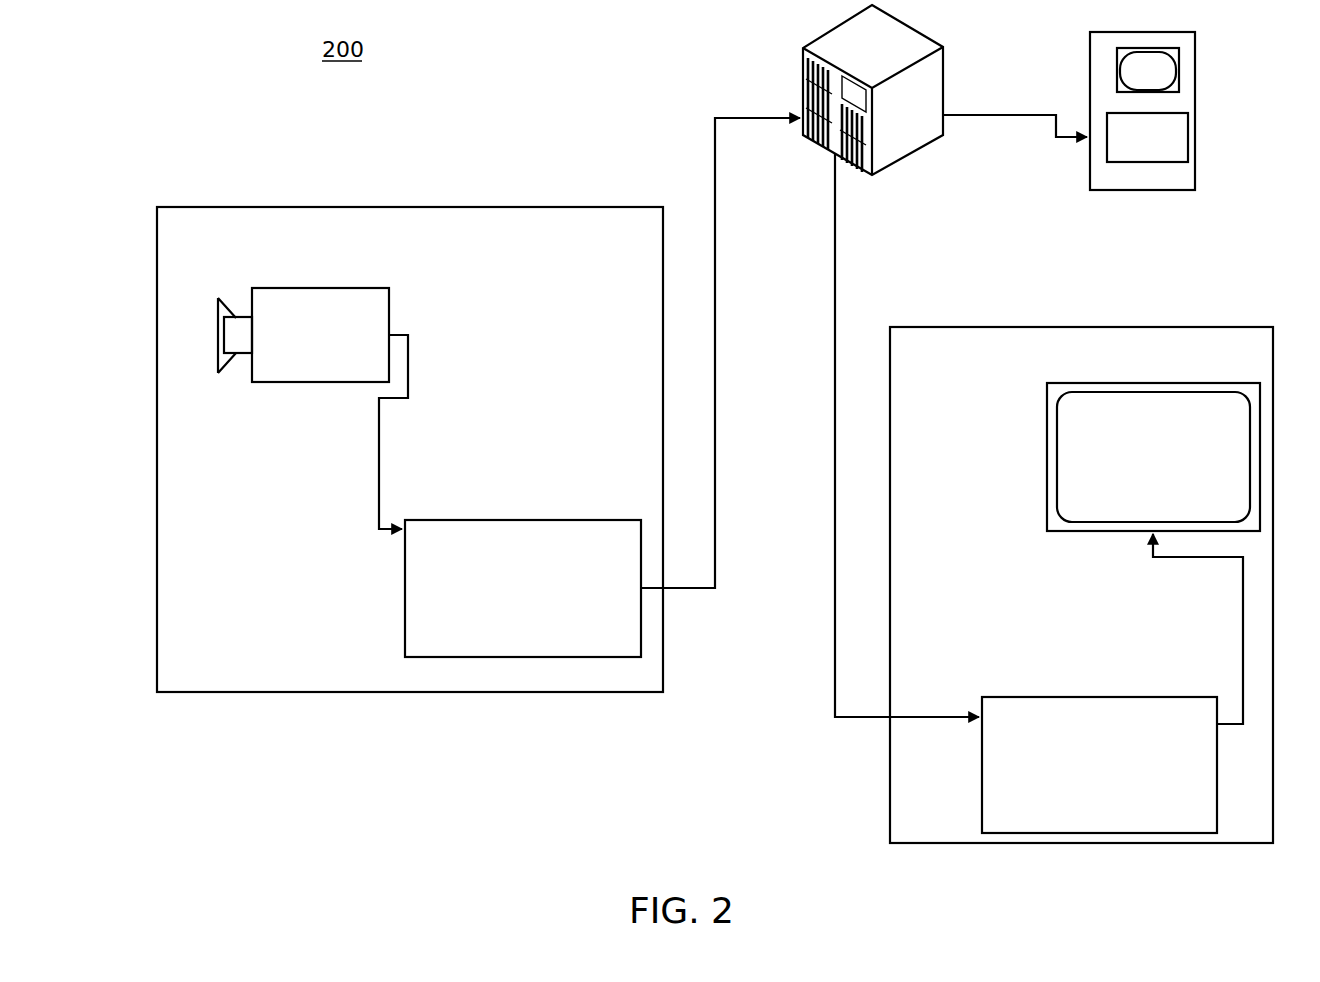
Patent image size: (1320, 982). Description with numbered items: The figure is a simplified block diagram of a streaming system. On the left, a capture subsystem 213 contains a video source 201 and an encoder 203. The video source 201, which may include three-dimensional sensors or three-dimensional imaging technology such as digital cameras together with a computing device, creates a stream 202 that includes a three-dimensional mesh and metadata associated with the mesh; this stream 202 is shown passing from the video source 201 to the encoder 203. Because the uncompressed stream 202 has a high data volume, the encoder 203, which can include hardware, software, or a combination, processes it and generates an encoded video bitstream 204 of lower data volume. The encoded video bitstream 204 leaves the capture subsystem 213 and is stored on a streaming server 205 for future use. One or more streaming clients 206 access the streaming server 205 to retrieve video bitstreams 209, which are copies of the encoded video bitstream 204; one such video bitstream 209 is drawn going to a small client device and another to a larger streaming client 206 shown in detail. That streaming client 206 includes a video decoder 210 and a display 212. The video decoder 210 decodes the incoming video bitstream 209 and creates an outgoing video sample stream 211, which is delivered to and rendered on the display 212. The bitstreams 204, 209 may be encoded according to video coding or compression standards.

The video source 201 is at (323, 288).
The stream 202 is at (370, 468).
The encoder 203 is at (538, 520).
The encoded video bitstream 204 is at (715, 153).
The streaming server 205 is at (803, 48).
The streaming client 206 is at (1195, 80).
The video bitstream 209 is at (1012, 115).
The video decoder 210 is at (982, 800).
The outgoing video sample stream 211 is at (1252, 622).
The display 212 is at (1047, 455).
The capture subsystem 213 is at (312, 692).